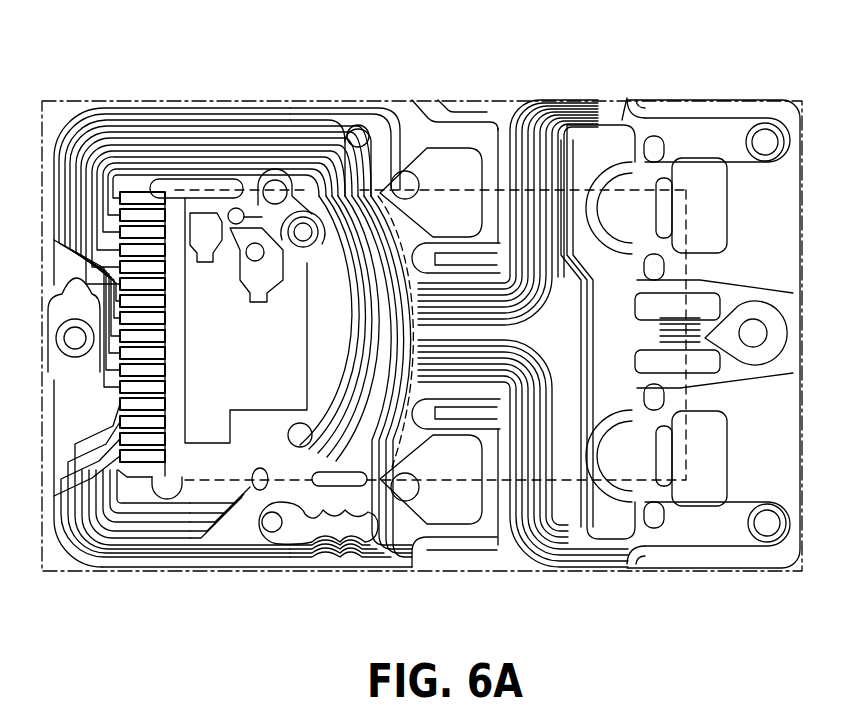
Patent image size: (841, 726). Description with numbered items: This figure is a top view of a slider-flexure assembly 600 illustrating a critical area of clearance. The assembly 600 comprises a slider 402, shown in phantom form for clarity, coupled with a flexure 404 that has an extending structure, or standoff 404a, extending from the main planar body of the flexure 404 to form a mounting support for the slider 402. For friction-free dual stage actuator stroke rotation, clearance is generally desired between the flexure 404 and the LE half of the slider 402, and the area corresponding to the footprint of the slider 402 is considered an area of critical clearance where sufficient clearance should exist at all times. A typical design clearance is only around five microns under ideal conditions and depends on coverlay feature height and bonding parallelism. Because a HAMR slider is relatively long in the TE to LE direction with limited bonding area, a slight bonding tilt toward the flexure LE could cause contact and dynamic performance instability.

The assembly 600 is at (126, 52).
The slider 402 is at (171, 190).
The standoff 404a is at (348, 193).
The flexure 404 is at (490, 122).
The trailing edge TE is at (170, 497).
The leading edge LE is at (686, 492).